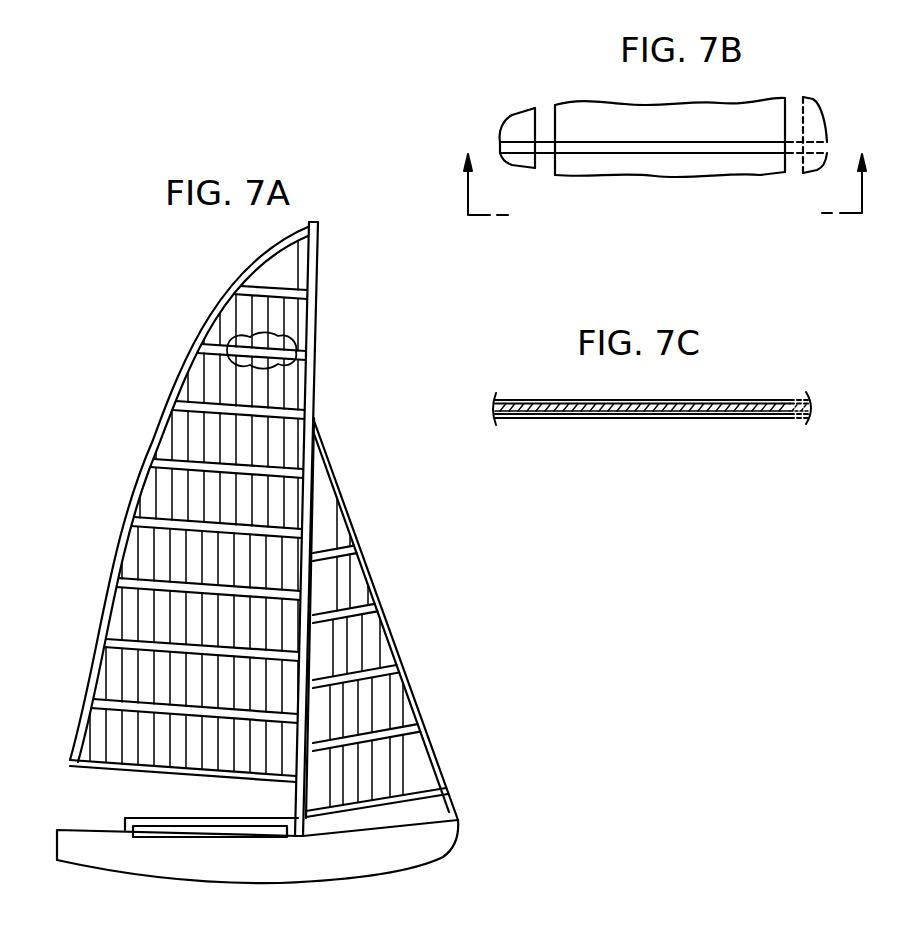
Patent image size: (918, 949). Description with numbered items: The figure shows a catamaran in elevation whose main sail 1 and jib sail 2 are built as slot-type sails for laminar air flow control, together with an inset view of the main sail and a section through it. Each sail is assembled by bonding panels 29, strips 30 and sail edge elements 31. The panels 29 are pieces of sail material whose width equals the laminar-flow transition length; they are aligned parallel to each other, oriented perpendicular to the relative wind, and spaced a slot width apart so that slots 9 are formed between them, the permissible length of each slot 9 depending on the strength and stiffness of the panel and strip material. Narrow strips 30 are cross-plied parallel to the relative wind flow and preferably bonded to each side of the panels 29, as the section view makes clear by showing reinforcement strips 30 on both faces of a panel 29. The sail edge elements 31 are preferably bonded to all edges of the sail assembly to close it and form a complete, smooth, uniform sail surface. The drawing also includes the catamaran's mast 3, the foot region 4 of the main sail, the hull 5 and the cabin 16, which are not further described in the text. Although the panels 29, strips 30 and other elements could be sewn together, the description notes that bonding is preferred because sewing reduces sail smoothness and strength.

In FIG. 7A, the main sail 1 is at (213, 337).
In FIG. 7A, the jib sail 2 is at (345, 500).
In FIG. 7A, the mast 3 is at (320, 223).
In FIG. 7A, the boom / sail foot 4 is at (70, 762).
In FIG. 7A, the hull 5 is at (456, 838).
In FIG. 7A, the slot 9 is at (147, 610).
In FIG. 7B, the slot 9 is at (545, 123).
In FIG. 7A, the cabin 16 is at (125, 820).
In FIG. 7A, the panel 29 is at (163, 550).
In FIG. 7B, the panel 29 is at (602, 127).
In FIG. 7C, the panel 29 is at (560, 403).
In FIG. 7A, the strip 30 is at (213, 403).
In FIG. 7B, the strip 30 is at (672, 142).
In FIG. 7C, the strip 30 is at (702, 400).
In FIG. 7A, the sail edge element 31 is at (272, 262).